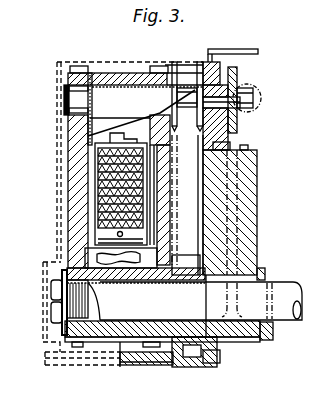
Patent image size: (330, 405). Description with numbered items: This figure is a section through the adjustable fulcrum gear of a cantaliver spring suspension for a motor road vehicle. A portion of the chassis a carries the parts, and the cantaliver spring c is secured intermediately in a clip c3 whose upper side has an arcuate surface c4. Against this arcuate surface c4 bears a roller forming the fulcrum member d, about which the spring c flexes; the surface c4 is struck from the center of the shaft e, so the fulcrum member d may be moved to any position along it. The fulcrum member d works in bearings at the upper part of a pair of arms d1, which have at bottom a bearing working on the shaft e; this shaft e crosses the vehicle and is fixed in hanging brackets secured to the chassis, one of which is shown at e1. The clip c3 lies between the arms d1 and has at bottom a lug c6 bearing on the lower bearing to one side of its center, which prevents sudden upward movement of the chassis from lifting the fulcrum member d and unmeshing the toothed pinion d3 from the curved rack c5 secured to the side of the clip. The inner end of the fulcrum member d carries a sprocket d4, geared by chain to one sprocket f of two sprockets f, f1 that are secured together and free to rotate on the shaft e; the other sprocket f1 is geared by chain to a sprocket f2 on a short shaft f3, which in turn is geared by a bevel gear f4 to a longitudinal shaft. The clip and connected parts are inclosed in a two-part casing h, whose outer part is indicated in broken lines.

The chassis portion a is at (241, 47).
The cantaliver spring c is at (100, 175).
The clip c3 is at (97, 198).
The arcuate surface c4 is at (103, 127).
The curved rack c5 is at (87, 97).
The lug c6 is at (133, 262).
The fulcrum member d is at (117, 103).
The arms d1 is at (90, 232).
The toothed pinion d3 is at (89, 73).
The sprocket d4 is at (175, 62).
The shaft e is at (272, 295).
The hanging bracket e1 is at (247, 207).
The sprocket f is at (175, 335).
The sprocket f1 is at (272, 338).
The sprocket f2 is at (88, 136).
The short shaft f3 is at (215, 100).
The bevel gear f4 is at (237, 128).
The casing h is at (43, 303).